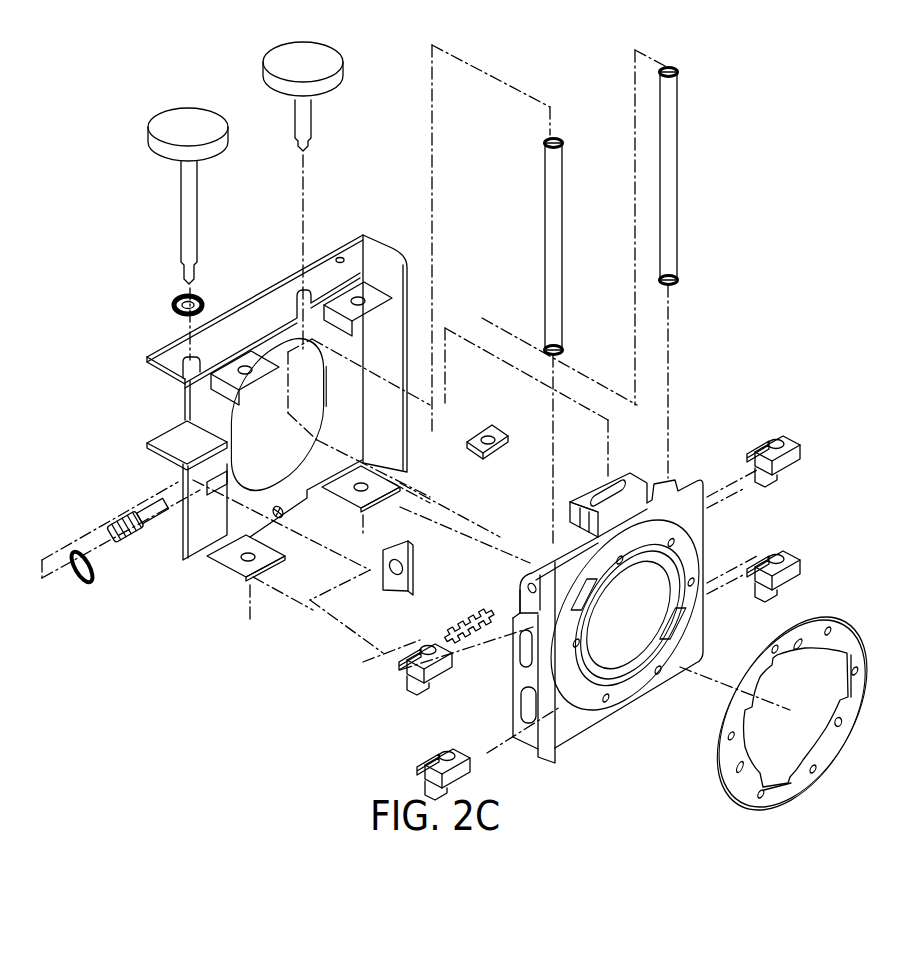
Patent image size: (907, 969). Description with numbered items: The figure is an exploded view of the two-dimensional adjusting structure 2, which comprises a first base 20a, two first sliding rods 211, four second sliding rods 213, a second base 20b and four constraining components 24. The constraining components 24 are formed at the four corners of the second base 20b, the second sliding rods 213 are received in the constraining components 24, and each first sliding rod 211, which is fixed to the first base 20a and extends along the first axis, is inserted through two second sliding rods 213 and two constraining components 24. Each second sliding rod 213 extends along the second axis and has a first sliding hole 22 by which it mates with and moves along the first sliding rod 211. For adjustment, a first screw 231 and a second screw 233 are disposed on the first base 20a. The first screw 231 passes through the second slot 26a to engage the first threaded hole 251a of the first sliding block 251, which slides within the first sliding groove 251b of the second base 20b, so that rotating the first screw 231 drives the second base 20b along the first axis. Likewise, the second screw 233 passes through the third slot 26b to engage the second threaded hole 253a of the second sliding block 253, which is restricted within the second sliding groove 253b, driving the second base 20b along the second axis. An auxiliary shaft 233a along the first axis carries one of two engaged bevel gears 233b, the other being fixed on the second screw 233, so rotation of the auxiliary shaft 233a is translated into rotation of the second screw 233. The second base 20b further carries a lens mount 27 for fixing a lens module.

The two-dimensional adjusting structure 2 is at (830, 65).
The first base 20a is at (255, 305).
The second base 20b is at (708, 513).
The first sliding hole 22 is at (773, 440).
The constraining component 24 is at (533, 722).
The second slot 26a is at (620, 490).
The third slot 26b is at (524, 668).
The lens mount 27 is at (850, 648).
The first sliding rod 211 is at (562, 179).
The second sliding rod 213 is at (800, 450).
The first screw 231 is at (272, 68).
The second screw 233 is at (146, 538).
The auxiliary shaft 233a is at (150, 137).
The bevel gear 233b is at (172, 303).
The first sliding block 251 is at (512, 440).
The first threaded hole 251a is at (496, 432).
The first sliding groove 251b is at (572, 528).
The second sliding block 253 is at (398, 556).
The second threaded hole 253a is at (393, 580).
The second sliding groove 253b is at (492, 622).